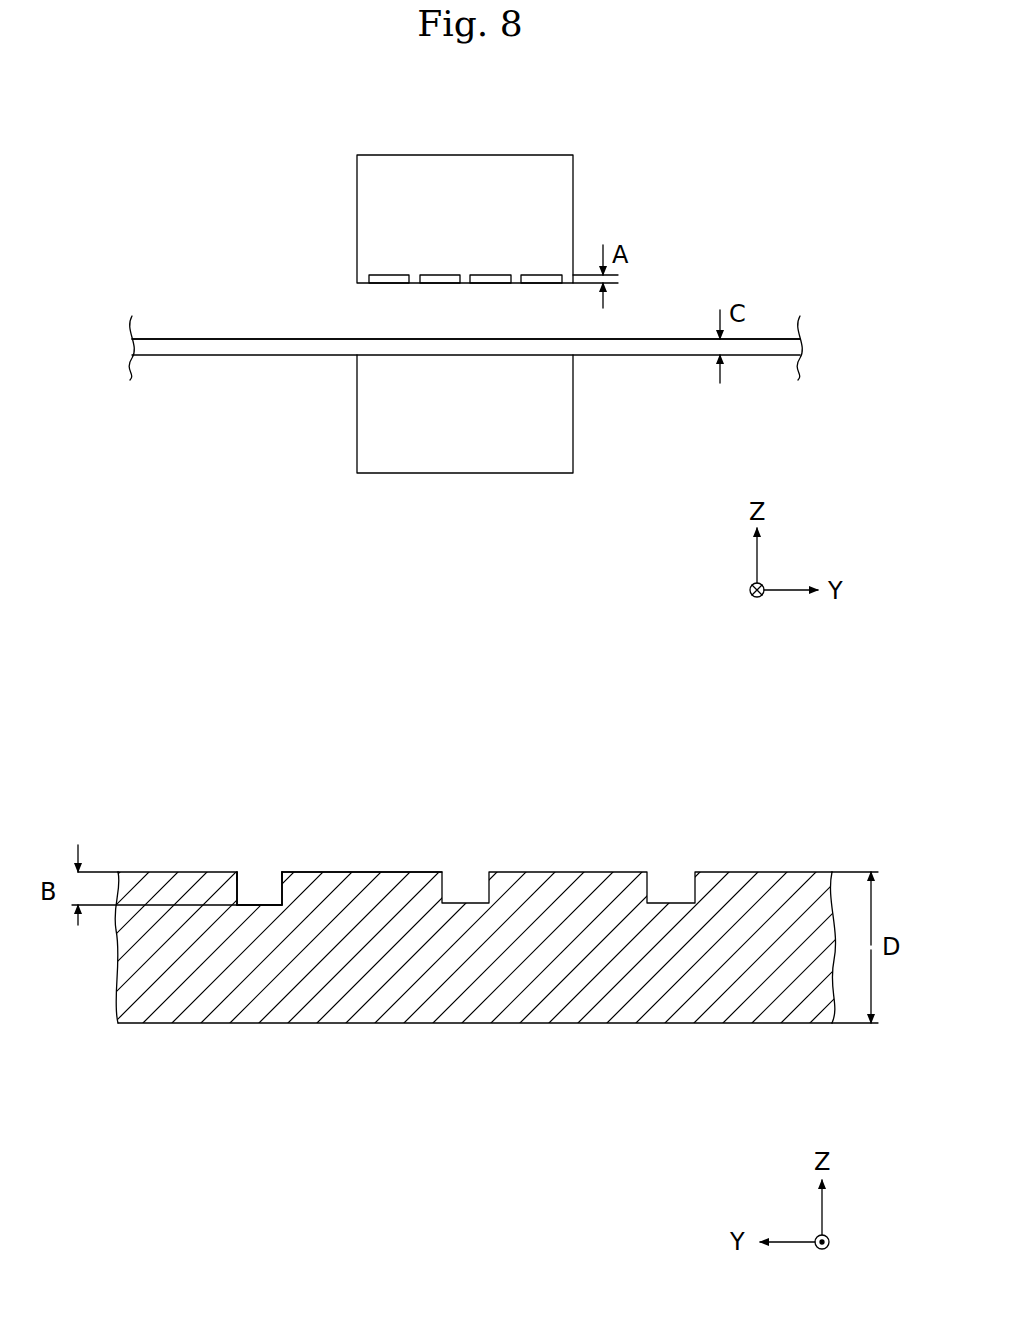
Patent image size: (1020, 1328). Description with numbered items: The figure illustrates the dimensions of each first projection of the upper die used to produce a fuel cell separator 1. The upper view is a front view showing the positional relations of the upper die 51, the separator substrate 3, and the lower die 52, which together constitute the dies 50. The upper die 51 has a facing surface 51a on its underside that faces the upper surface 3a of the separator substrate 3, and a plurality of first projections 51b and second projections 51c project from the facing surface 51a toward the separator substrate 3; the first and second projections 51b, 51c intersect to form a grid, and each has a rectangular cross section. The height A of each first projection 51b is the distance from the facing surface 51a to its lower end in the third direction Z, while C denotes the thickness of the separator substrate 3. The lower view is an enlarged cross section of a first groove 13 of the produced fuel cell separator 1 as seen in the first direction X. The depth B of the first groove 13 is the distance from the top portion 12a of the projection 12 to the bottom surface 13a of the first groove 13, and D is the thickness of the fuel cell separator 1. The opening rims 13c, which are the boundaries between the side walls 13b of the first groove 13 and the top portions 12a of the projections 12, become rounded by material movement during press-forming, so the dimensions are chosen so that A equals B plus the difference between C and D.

The fuel cell separator 1 is at (485, 918).
The separator substrate 3 is at (198, 346).
The upper surface of the separator substrate 3a is at (218, 338).
The projection 12 is at (472, 1002).
The top portion of the projection 12a is at (364, 871).
The first groove 13 is at (270, 892).
The bottom surface of the first groove 13a is at (257, 892).
The side wall of the first groove 13b is at (233, 892).
The opening rim of the first groove 13c is at (239, 872).
The dies 50 is at (518, 314).
The upper die 51 is at (573, 208).
The facing surface 51a is at (385, 284).
The first projection 51b is at (413, 283).
The second projection 51c is at (487, 283).
The lower die 52 is at (573, 437).